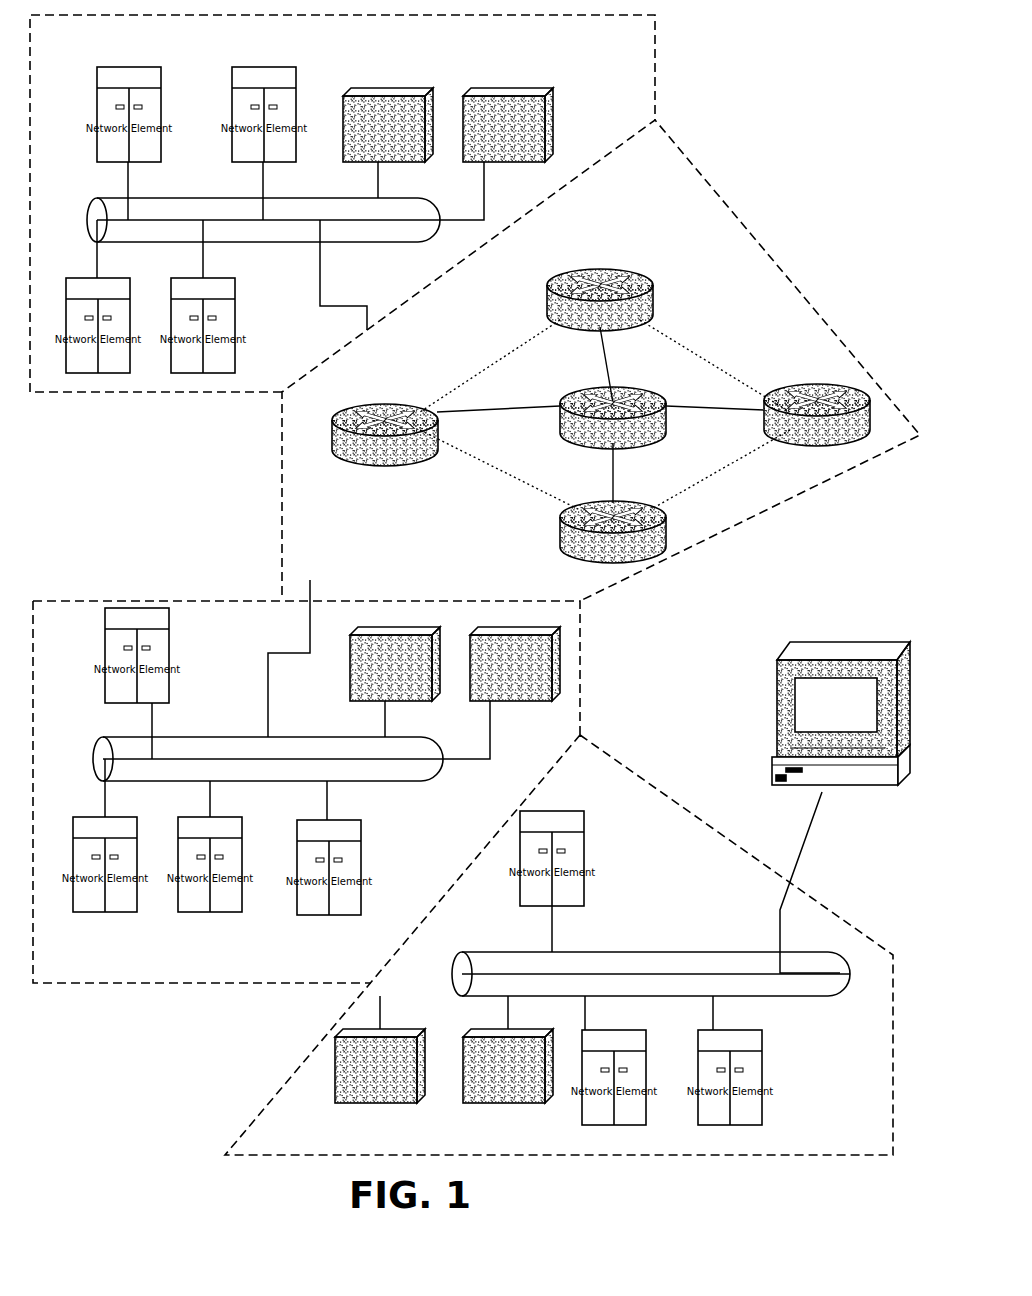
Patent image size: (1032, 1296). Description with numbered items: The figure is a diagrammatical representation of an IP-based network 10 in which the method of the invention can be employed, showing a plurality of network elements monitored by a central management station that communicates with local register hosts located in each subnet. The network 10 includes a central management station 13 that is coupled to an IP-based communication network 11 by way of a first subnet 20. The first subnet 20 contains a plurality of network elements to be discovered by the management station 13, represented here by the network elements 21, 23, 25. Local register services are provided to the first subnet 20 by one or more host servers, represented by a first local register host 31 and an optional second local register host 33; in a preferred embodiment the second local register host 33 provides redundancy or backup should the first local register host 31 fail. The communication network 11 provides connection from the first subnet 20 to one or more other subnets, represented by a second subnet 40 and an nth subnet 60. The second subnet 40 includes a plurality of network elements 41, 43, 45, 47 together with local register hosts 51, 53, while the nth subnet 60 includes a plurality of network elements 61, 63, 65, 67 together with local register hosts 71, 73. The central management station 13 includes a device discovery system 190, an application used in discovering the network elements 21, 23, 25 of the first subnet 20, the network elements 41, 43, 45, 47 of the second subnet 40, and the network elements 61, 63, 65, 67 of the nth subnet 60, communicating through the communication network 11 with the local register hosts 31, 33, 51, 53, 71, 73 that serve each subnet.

The IP-based network 10 is at (180, 1075).
The IP-based communication network 11 is at (770, 260).
The central management station 13 is at (833, 643).
The device discovery system 190 is at (883, 775).
The first subnet 20 is at (814, 898).
The network element 21 is at (565, 811).
The network element 23 is at (598, 1126).
The network element 25 is at (746, 1126).
The first local register host 31 is at (372, 1104).
The second local register host 33 is at (517, 1104).
The second subnet 40 is at (58, 597).
The network element 41 is at (168, 620).
The network element 43 is at (118, 912).
The network element 45 is at (233, 912).
The network element 47 is at (342, 914).
The local register host 51 is at (350, 688).
The local register host 53 is at (514, 701).
The nth subnet 60 is at (655, 42).
The network element 61 is at (120, 67).
The network element 63 is at (268, 67).
The network element 65 is at (112, 278).
The network element 67 is at (237, 345).
The local register host 71 is at (378, 88).
The local register host 73 is at (522, 87).